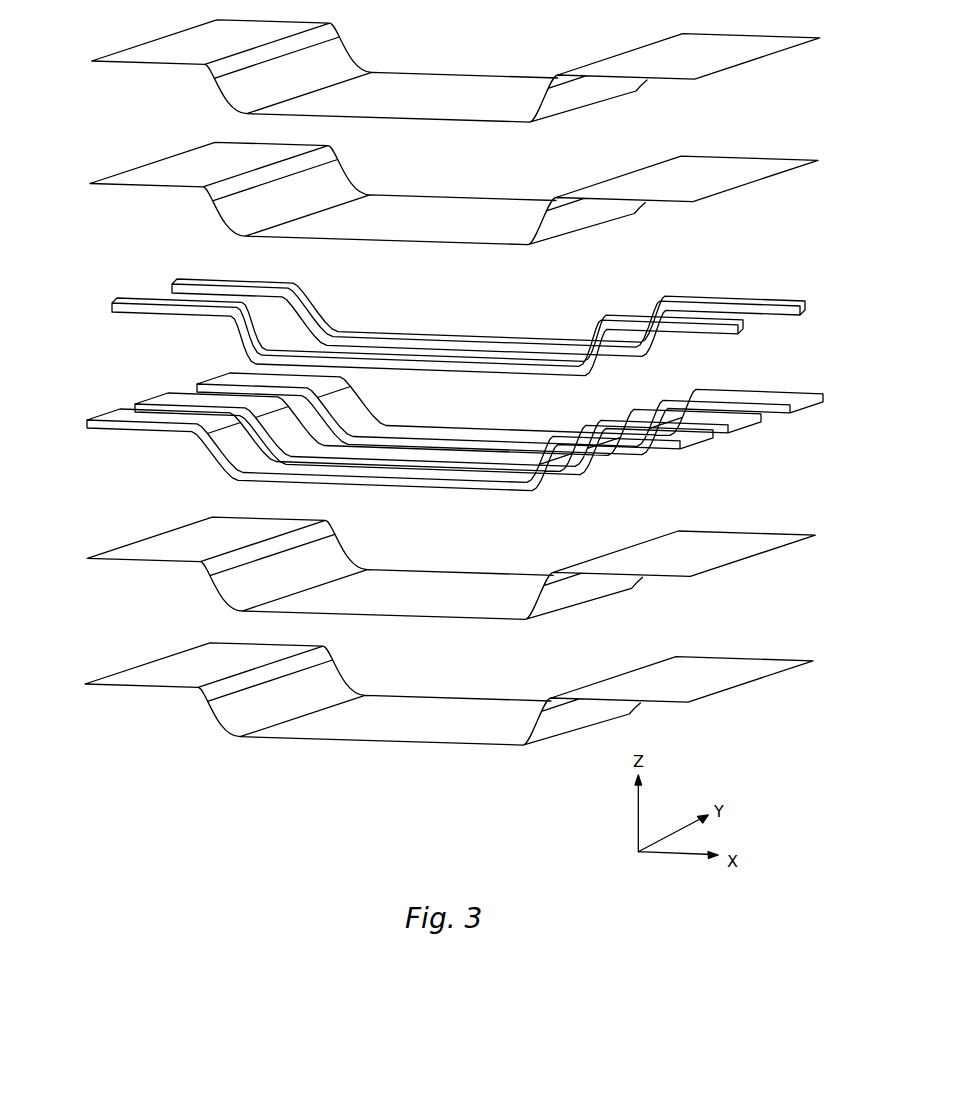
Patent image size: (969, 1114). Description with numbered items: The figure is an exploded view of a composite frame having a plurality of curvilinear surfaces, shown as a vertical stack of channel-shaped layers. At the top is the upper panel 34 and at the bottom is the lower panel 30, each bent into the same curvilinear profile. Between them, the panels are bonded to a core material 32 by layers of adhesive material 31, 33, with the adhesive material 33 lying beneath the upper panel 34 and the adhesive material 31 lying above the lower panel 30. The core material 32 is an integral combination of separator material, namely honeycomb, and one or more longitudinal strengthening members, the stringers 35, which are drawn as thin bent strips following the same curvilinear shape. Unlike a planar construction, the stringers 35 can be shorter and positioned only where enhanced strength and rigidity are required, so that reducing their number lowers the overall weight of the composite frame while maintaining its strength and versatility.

The lower panel 30 is at (737, 658).
The adhesive material 31 is at (737, 535).
The core material 32 is at (740, 393).
The adhesive material 33 is at (742, 158).
The upper panel 34 is at (742, 34).
The stringers 35 is at (740, 292).